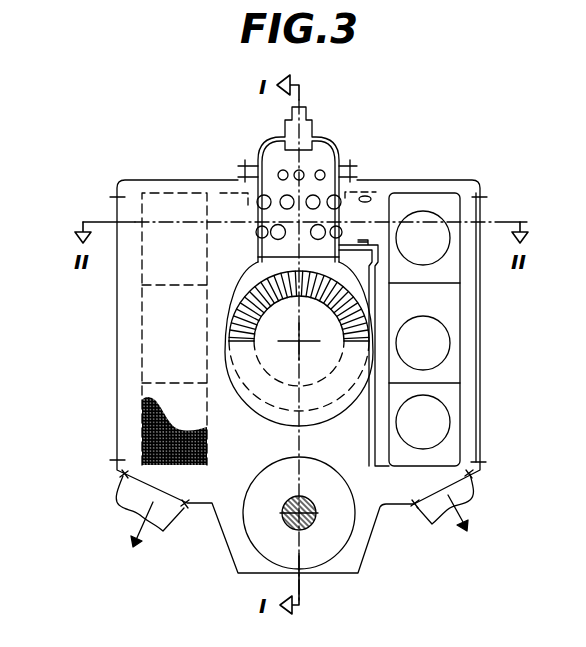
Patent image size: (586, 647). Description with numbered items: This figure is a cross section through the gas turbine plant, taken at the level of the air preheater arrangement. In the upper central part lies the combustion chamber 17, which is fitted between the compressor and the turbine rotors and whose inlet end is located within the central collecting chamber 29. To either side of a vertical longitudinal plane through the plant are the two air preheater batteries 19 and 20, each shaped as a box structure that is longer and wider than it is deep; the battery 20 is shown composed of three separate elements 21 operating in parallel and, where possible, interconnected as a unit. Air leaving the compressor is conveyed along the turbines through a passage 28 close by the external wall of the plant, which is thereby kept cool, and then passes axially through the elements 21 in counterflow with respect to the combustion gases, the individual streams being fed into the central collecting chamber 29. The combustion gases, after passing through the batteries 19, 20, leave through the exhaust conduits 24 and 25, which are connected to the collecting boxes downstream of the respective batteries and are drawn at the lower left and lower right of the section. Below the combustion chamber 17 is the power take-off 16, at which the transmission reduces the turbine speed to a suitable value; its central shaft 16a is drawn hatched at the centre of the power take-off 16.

The power take-off 16 is at (337, 508).
The shaft of lower rotor 16a is at (312, 523).
The combustion chamber 17 is at (320, 162).
The air preheater battery 19 is at (147, 322).
The air preheater battery 20 is at (447, 303).
The elements 21 is at (452, 403).
The exhaust conduit 24 is at (130, 503).
The exhaust conduit 25 is at (468, 498).
The passage 28 is at (473, 271).
The central collecting chamber 29 is at (353, 208).